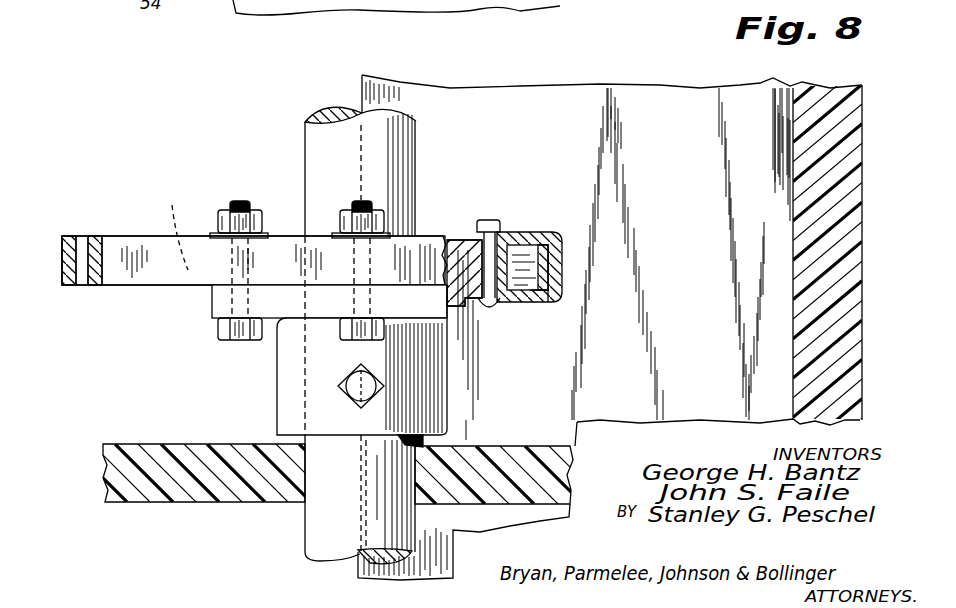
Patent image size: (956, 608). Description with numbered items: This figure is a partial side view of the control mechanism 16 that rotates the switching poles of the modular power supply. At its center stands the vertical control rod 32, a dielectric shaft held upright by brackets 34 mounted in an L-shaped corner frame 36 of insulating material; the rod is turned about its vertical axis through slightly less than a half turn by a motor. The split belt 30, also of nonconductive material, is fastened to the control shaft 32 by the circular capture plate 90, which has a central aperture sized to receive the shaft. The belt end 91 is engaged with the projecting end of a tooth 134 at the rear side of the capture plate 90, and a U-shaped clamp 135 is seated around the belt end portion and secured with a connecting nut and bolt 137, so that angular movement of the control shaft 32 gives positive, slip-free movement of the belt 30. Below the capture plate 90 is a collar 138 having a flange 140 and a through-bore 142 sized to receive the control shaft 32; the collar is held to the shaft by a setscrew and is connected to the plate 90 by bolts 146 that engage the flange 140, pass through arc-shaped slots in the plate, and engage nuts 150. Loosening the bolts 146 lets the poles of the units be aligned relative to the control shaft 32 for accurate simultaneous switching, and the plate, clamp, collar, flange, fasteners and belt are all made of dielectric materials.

The control mechanism 16 is at (881, 279).
The belt 30 is at (108, 236).
The control rod 32 is at (402, 150).
The brackets 34 is at (162, 488).
The corner frame 36 is at (843, 158).
The capture plate 90 is at (169, 224).
The belt end 91 is at (543, 298).
The tooth 134 is at (357, 390).
The U-shaped clamp 135 is at (541, 232).
The connecting nut and bolt 137 is at (490, 219).
The collar 138 is at (432, 387).
The flange 140 is at (213, 302).
The through-bore 142 is at (303, 370).
The bolts 146 is at (236, 207).
The nuts 150 is at (338, 222).